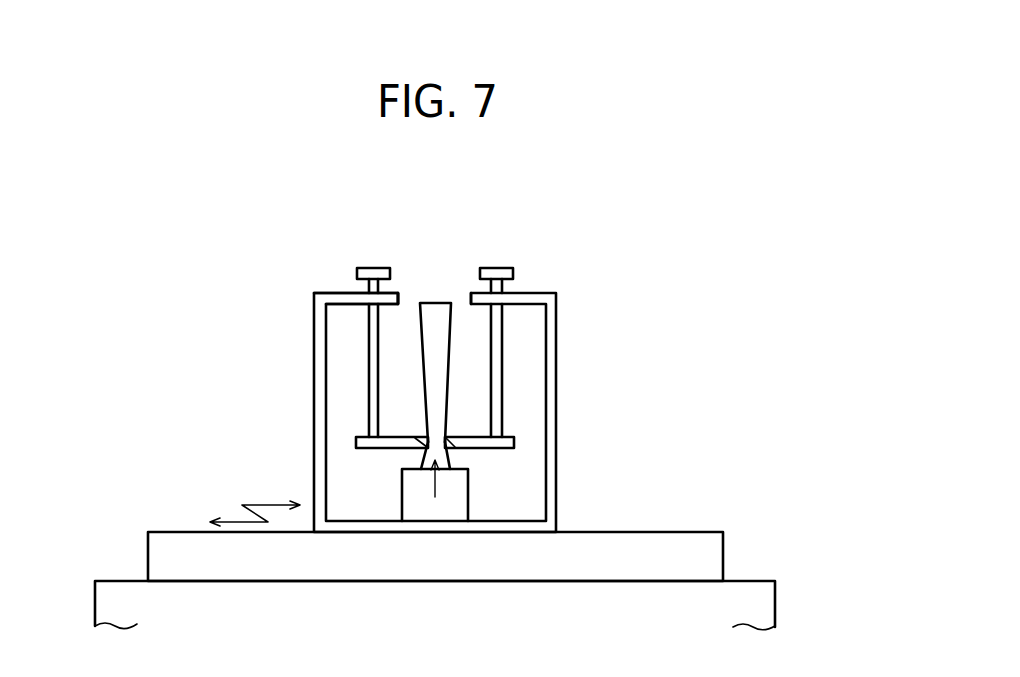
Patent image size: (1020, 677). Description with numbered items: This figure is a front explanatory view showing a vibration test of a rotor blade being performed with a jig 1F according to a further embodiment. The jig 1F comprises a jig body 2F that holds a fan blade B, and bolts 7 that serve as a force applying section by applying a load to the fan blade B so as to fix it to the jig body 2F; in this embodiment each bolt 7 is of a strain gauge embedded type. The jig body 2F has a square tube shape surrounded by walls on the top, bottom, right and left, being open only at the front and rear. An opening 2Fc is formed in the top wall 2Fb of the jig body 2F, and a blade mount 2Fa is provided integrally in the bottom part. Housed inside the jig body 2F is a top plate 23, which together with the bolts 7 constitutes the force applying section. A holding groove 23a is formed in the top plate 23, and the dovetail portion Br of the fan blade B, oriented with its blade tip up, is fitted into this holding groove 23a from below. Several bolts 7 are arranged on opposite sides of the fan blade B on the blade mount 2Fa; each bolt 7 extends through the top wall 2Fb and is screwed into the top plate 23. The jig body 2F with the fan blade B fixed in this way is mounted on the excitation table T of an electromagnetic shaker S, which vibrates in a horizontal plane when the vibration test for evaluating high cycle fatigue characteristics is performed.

The jig 1F is at (670, 285).
The jig body 2F is at (471, 371).
The blade mount 2Fa is at (412, 497).
The top wall 2Fb is at (339, 298).
The opening 2Fc is at (403, 298).
The bolts 7 is at (368, 334).
The top plate 23 is at (378, 424).
The holding groove 23a is at (428, 446).
The fan blade B is at (512, 357).
The dovetail portion Br is at (447, 458).
The electromagnetic shaker S is at (445, 617).
The excitation table T is at (595, 563).